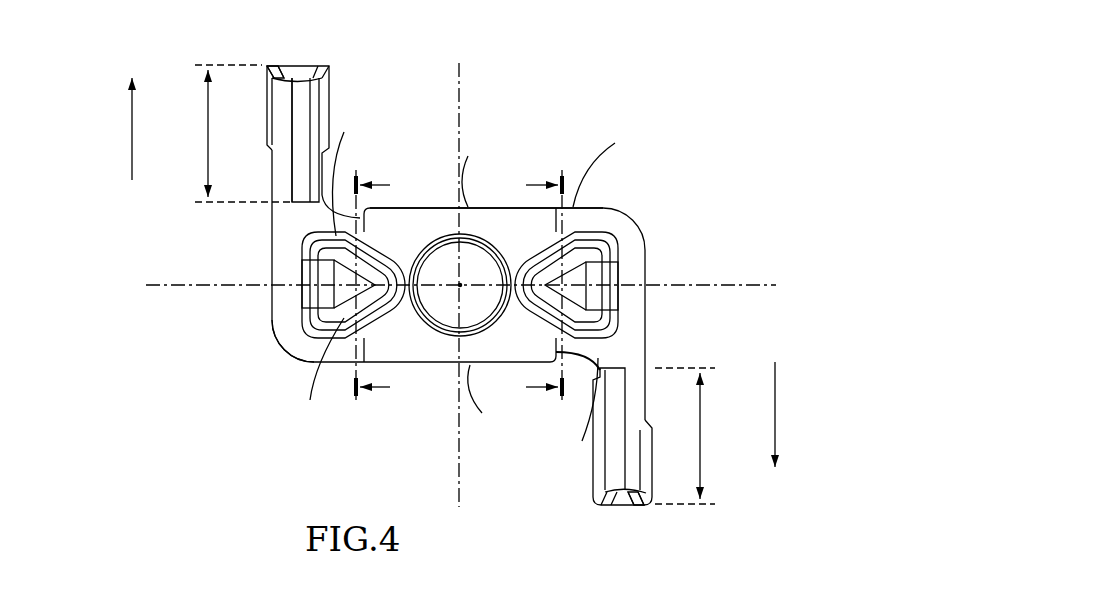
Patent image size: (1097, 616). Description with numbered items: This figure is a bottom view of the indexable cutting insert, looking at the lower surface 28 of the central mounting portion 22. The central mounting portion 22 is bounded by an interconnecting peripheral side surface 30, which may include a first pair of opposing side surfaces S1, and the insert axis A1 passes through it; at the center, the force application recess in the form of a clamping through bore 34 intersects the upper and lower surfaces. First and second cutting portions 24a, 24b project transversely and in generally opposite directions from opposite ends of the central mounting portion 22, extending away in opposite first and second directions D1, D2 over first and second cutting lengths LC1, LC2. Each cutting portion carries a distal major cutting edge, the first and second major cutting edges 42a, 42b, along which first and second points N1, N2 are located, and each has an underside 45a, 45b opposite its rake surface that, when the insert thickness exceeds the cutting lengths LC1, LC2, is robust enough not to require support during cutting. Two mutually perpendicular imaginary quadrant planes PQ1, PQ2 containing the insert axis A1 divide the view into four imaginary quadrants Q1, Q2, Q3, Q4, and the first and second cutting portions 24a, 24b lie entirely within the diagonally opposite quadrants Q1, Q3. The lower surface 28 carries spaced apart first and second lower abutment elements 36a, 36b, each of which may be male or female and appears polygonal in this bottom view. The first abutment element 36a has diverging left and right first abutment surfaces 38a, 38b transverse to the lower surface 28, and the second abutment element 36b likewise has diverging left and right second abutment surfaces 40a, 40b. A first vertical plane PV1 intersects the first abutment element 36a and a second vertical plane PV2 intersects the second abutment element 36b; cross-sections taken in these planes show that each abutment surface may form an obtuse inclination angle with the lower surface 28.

The central mounting portion 22 is at (440, 224).
The first cutting portion 24a is at (320, 101).
The second cutting portion 24b is at (599, 458).
The lower surface 28 is at (293, 333).
The peripheral side surface 30 is at (598, 200).
The clamping through bore 34 is at (458, 311).
The first lower abutment element 36a is at (333, 296).
The second lower abutment element 36b is at (584, 276).
The left first abutment surface 38a is at (315, 375).
The right first abutment surface 38b is at (355, 172).
The left second abutment surface 40a is at (613, 163).
The right second abutment surface 40b is at (573, 412).
The first major cutting edge 42a is at (297, 66).
The second major cutting edge 42b is at (624, 507).
The underside of first cutting portion 45a is at (287, 116).
The underside of second cutting portion 45b is at (637, 441).
The first point N1 is at (268, 68).
The second point N2 is at (650, 500).
The insert axis A1 is at (461, 286).
The first pair of opposing side surfaces S1 is at (484, 282).
The first vertical plane PV1 is at (357, 287).
The second vertical plane PV2 is at (564, 287).
The first quadrant plane PQ1 is at (461, 284).
The second quadrant plane PQ2 is at (458, 285).
The first imaginary quadrant Q1 is at (395, 120).
The second imaginary quadrant Q2 is at (387, 442).
The third imaginary quadrant Q3 is at (533, 442).
The fourth imaginary quadrant Q4 is at (536, 122).
The first cutting length LC1 is at (239, 133).
The second cutting length LC2 is at (688, 436).
The first direction D1 is at (134, 116).
The second direction D2 is at (776, 429).